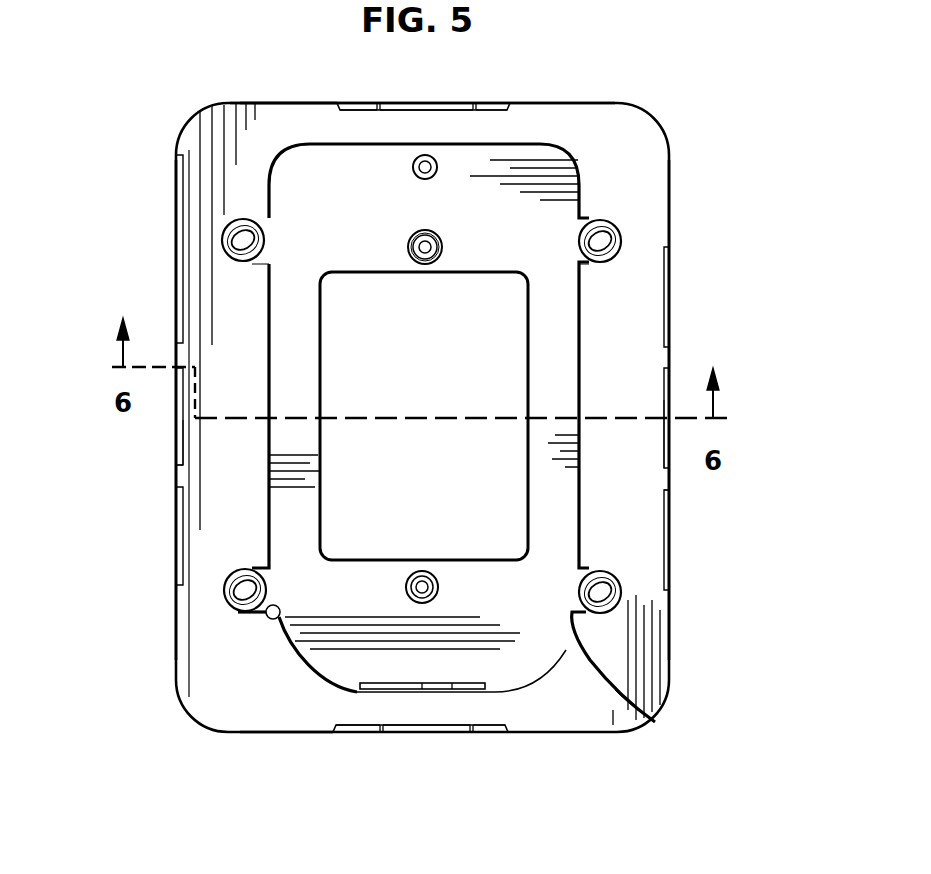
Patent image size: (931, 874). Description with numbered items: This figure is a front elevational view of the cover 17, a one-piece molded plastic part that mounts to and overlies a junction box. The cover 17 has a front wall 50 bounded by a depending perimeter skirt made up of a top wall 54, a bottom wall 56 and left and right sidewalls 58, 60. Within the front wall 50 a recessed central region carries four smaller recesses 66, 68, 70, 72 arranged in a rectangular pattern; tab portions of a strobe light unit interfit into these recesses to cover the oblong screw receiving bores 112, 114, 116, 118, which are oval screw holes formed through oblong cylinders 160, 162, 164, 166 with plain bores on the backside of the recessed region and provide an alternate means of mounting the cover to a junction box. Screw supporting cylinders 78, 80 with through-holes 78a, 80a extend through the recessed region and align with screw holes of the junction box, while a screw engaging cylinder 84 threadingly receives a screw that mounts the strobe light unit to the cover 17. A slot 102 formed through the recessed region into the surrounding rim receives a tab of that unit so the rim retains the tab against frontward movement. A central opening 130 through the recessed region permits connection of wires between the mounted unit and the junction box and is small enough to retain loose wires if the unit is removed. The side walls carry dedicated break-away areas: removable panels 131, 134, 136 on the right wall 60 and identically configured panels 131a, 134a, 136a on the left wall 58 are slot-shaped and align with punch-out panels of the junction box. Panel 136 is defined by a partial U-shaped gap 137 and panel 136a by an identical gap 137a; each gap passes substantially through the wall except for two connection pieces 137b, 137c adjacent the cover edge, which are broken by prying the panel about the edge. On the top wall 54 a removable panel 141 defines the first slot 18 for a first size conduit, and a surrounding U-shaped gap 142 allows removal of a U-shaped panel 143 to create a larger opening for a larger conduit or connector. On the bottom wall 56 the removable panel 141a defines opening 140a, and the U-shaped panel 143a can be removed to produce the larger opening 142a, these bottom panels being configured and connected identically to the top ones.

The cover 17 is at (633, 99).
The first slot 18 is at (465, 103).
The front wall 50 is at (640, 555).
The top wall 54 is at (340, 103).
The bottom wall 56 is at (265, 732).
The left sidewall 58 is at (176, 162).
The right sidewall 60 is at (672, 162).
The smaller recess 66 is at (243, 263).
The smaller recess 68 is at (275, 620).
The smaller recess 70 is at (578, 268).
The smaller recess 72 is at (640, 717).
The screw supporting cylinder 78 is at (445, 247).
The through-hole 78a is at (425, 240).
The screw supporting cylinder 80 is at (435, 684).
The through-hole 80a is at (410, 598).
The screw engaging cylinder 84 is at (420, 160).
The slot 102 is at (445, 585).
The oblong screw receiving bore 112 is at (243, 235).
The oblong screw receiving bore 114 is at (245, 590).
The oblong screw receiving bore 116 is at (620, 242).
The oblong screw receiving bore 118 is at (603, 592).
The central opening 130 is at (520, 330).
The removable panel 131 is at (660, 535).
The removable panel 131a is at (177, 540).
The removable panel 134 is at (673, 293).
The removable panel 134a is at (176, 265).
The removable panel 136 is at (670, 407).
The removable panel 136a is at (176, 440).
The partial U-shaped gap 137 is at (670, 472).
The partial U-shaped gap 137a is at (176, 474).
The connection piece 137b is at (176, 364).
The connection piece 137c is at (176, 466).
The opening 140a is at (387, 733).
The removable panel 141 is at (451, 103).
The removable panel 141a is at (442, 733).
The U-shaped gap 142 is at (508, 103).
The larger opening 142a is at (340, 732).
The U-shaped panel 143 is at (359, 103).
The U-shaped panel 143a is at (487, 732).
The oblong cylinder 160 is at (605, 266).
The oblong cylinder 162 is at (245, 240).
The oblong cylinder 164 is at (238, 613).
The oblong cylinder 166 is at (620, 612).